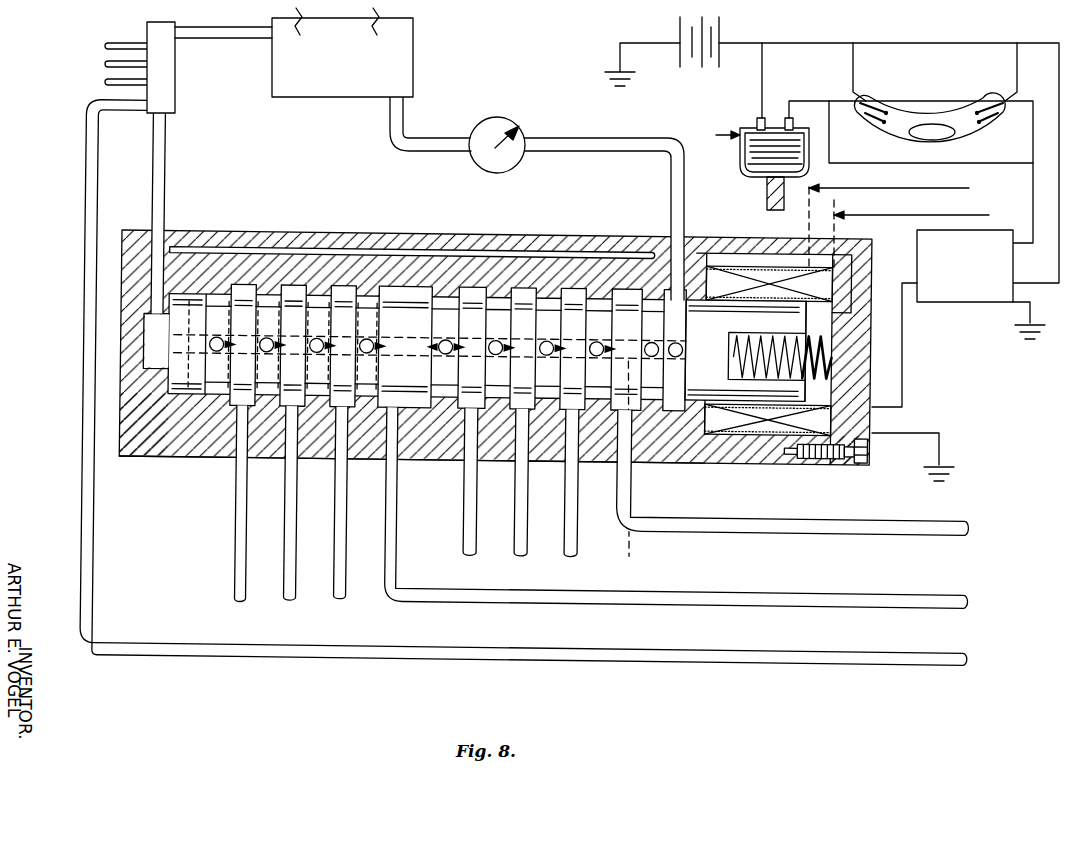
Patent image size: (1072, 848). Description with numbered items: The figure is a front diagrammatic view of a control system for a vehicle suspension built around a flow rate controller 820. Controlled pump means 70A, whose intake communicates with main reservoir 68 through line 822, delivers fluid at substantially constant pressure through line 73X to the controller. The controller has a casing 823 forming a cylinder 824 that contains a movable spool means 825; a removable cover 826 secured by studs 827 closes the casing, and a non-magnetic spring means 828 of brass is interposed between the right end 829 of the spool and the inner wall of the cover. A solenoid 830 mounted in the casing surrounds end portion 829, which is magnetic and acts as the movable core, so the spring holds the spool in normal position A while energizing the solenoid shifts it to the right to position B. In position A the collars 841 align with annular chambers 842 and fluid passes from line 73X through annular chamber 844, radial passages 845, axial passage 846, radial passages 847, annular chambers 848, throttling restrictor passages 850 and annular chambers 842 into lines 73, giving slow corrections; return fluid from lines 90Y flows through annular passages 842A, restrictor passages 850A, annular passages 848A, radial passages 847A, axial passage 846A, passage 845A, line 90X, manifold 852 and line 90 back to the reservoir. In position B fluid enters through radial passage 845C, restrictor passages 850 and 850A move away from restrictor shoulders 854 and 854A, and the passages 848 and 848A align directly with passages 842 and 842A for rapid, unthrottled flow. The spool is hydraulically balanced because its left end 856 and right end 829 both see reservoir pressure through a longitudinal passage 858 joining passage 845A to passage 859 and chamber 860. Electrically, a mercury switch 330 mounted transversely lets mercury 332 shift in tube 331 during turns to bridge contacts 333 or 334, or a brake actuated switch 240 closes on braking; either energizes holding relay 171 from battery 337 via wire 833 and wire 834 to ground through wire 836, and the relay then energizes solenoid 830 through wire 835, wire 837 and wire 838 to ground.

The line 90 is at (85, 336).
The line 90X is at (160, 195).
The lines 90Y is at (240, 596).
The lines 73 is at (476, 548).
The line 73X is at (610, 148).
The main reservoir 68 is at (350, 73).
The controlled pump means 70A is at (508, 128).
The line 822 is at (388, 120).
The manifold 852 is at (176, 100).
The flow rate controller 820 is at (140, 465).
The casing 823 is at (173, 447).
The cylinder 824 is at (405, 410).
The spool means 825 is at (445, 290).
The removable cover 826 is at (818, 450).
The studs 827 is at (866, 452).
The non-magnetic spring means 828 is at (745, 350).
The end portion of spool means 829 is at (812, 388).
The solenoid 830 is at (762, 428).
The collars 841 is at (573, 285).
The annular chambers 842 is at (600, 290).
The annular passages 842A is at (405, 285).
The annular chamber 844 is at (695, 250).
The radial passages 845 is at (750, 312).
The passage 845A is at (150, 258).
The radial passage 845C is at (759, 358).
The axial passage 846 is at (660, 400).
The axial passage 846A is at (189, 282).
The radial passages 847 is at (590, 420).
The radial passages 847A is at (300, 285).
The annular chambers 848 is at (635, 288).
The annular passages 848A is at (377, 292).
The restrictor passages 850 is at (632, 405).
The restrictor passages 850A is at (217, 395).
The restrictor shoulders 854 is at (535, 415).
The restrictor shoulders 854A is at (372, 425).
The left end of spool means 856 is at (165, 357).
The longitudinal passage 858 is at (482, 249).
The passage 859 is at (852, 272).
The chamber 860 is at (827, 321).
The wire 833 is at (812, 43).
The wire 834 is at (978, 165).
The wire 835 is at (1040, 335).
The wire 836 is at (1015, 325).
The wire 837 is at (903, 360).
The wire 838 is at (942, 448).
The holding relay 171 is at (970, 273).
The brake actuated switch 240 is at (716, 135).
The battery 337 is at (712, 70).
The mercury switch 330 is at (912, 98).
The tube 331 is at (932, 112).
The mercury 332 is at (932, 135).
The contacts 333 is at (987, 120).
The contacts 334 is at (875, 120).